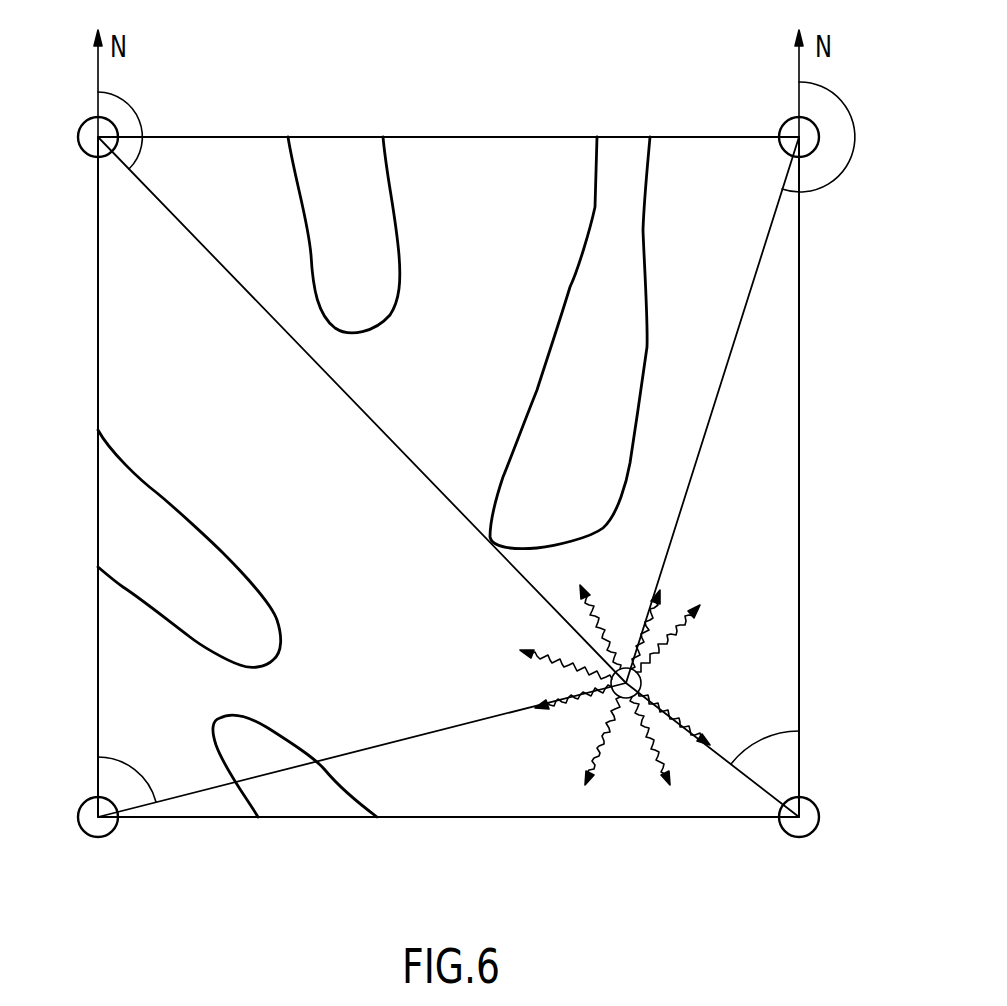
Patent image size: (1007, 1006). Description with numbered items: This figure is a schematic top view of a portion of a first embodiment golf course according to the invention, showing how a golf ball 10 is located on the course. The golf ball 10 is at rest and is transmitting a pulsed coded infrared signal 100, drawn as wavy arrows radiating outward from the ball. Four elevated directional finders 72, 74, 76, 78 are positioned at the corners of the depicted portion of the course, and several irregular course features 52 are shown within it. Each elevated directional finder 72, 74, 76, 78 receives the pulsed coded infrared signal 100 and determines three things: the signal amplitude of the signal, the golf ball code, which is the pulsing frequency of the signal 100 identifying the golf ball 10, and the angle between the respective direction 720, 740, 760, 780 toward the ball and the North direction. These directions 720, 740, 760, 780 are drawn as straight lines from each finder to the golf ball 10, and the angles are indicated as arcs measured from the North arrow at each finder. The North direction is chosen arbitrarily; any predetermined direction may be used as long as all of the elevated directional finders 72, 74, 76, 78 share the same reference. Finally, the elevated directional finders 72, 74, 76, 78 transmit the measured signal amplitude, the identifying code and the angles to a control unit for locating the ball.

The golf ball 10 is at (641, 681).
The hazard feature 52 is at (360, 273).
The elevated directional finder 72 is at (77, 140).
The elevated directional finder 74 is at (786, 124).
The elevated directional finder 76 is at (116, 832).
The elevated directional finder 78 is at (815, 830).
The pulsed coded infrared signal 100 is at (673, 620).
The direction 720 is at (383, 428).
The direction 740 is at (699, 453).
The direction 760 is at (424, 734).
The direction 780 is at (730, 763).